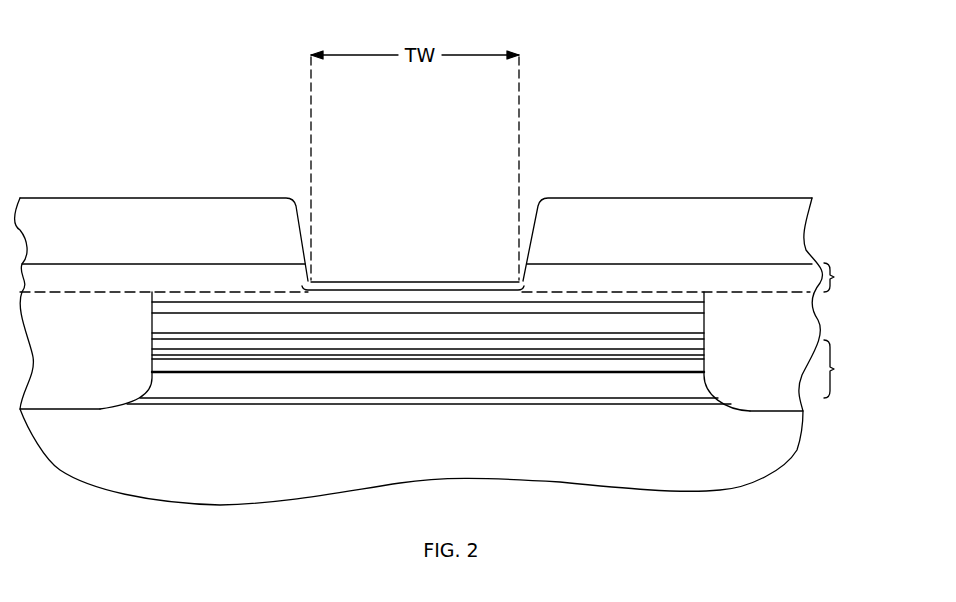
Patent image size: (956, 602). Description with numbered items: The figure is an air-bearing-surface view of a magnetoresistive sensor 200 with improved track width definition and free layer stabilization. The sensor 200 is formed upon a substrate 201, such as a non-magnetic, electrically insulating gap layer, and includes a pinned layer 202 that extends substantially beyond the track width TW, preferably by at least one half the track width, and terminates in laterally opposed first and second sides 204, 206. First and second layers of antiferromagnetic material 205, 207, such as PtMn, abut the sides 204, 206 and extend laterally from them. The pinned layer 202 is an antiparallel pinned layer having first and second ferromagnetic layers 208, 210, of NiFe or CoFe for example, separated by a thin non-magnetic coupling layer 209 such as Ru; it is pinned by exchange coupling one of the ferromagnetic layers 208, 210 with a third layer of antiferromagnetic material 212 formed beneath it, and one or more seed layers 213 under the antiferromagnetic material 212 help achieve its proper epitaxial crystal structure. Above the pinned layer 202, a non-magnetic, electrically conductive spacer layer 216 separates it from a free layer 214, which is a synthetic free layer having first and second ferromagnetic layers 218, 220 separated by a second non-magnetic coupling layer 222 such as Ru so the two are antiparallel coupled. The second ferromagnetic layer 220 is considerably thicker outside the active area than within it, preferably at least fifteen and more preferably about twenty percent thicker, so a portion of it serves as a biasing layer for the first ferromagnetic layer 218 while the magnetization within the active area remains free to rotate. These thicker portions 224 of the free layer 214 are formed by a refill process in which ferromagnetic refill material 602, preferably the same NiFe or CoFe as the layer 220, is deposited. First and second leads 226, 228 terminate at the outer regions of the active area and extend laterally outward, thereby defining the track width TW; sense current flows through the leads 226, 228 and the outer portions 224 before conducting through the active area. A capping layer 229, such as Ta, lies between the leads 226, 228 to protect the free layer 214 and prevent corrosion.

The magnetoresistive sensor 200 is at (603, 523).
The substrate 201 is at (438, 452).
The pinned layer 202 is at (291, 380).
The first side 204 is at (710, 365).
The first layer of antiferromagnetic material 205 is at (730, 326).
The second side 206 is at (145, 326).
The second layer of antiferromagnetic material 207 is at (80, 340).
The first ferromagnetic layer 208 is at (470, 362).
The non-magnetic coupling layer 209 is at (500, 355).
The second ferromagnetic layer 210 is at (556, 347).
The third layer of antiferromagnetic material 212 is at (233, 400).
The seed layer 213 is at (410, 400).
The free layer 214 is at (470, 250).
The spacer layer 216 is at (705, 338).
The first ferromagnetic layer of free layer 218 is at (539, 325).
The second ferromagnetic layer of free layer 220 is at (383, 296).
The second non-magnetic coupling layer 222 is at (702, 305).
The thicker portions of free layer 224 is at (178, 263).
The first lead 226 is at (600, 212).
The second lead 228 is at (90, 214).
The capping layer 229 is at (430, 290).
The ferromagnetic refill material 602 is at (96, 278).